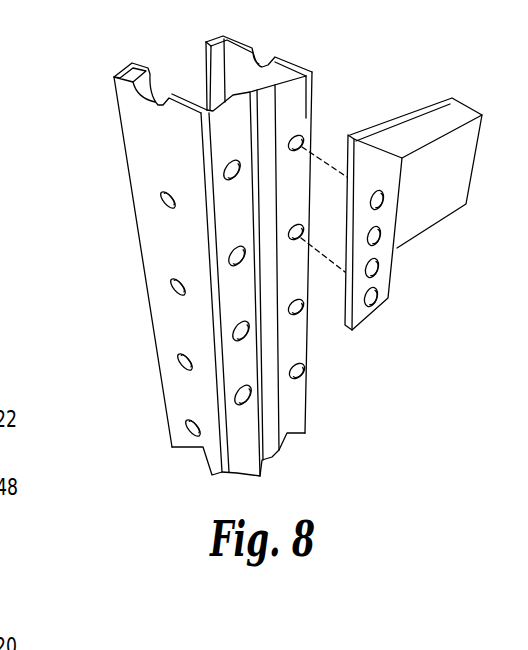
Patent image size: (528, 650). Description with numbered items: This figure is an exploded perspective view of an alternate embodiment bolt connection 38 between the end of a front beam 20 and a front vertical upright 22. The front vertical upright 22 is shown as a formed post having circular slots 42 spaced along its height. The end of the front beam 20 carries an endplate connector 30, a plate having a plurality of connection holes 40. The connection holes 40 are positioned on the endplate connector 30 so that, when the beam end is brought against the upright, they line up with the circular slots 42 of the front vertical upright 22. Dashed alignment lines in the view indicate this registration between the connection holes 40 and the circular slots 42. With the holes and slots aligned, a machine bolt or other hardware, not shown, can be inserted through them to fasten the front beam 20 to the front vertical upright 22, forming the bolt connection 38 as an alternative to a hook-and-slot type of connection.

The front vertical upright 22 is at (195, 249).
The circular slots 42 is at (301, 228).
The bolt connection 38 is at (430, 181).
The front beam 20 is at (447, 98).
The endplate connector 30 is at (387, 188).
The connection holes 40 is at (386, 202).